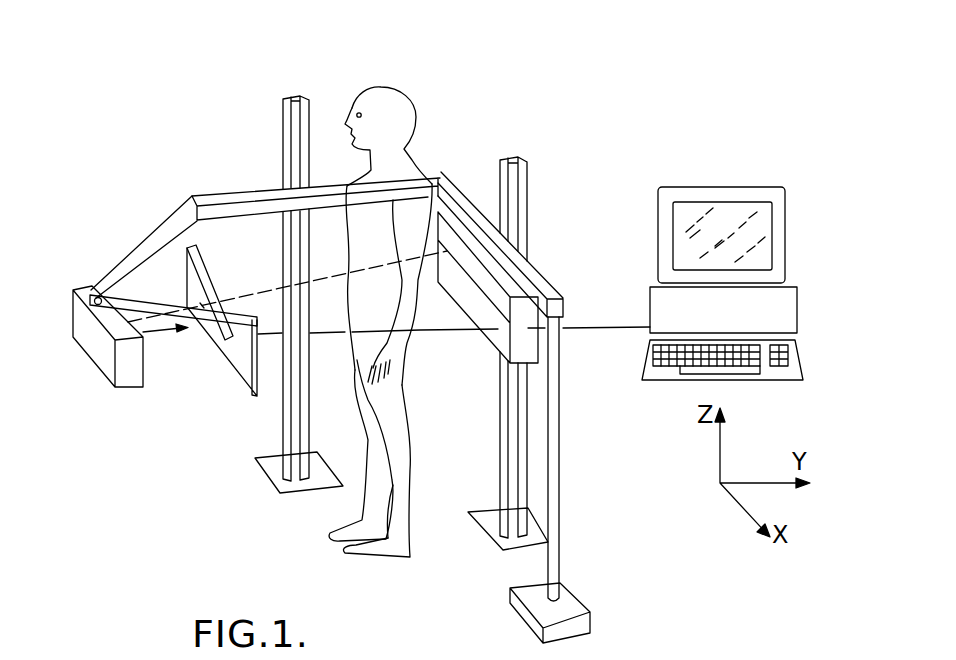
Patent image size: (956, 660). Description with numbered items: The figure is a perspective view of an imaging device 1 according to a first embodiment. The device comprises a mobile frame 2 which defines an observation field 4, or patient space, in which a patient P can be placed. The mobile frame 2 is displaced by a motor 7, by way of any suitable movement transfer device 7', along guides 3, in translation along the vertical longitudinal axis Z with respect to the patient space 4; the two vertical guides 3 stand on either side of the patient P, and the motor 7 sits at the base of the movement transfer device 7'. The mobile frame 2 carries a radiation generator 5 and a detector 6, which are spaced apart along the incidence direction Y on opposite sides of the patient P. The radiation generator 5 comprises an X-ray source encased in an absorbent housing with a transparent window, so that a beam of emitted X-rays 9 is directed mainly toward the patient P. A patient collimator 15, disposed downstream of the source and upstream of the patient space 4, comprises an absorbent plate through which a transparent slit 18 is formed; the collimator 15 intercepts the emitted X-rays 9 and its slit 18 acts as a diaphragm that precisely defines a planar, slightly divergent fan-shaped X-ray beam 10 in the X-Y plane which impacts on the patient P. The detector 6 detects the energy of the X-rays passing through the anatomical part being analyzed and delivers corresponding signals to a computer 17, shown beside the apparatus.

The imaging device 1 is at (559, 236).
The frame 2 is at (537, 281).
The guides 3 is at (287, 113).
The observation field 4 is at (428, 141).
The radiation generator 5 is at (129, 371).
The detector 6 is at (490, 338).
The motor 7 is at (563, 605).
The movement transfer device 7' is at (576, 459).
The beam of emitted X-rays 9 is at (160, 335).
The X-ray beam 10 is at (270, 307).
The patient collimator 15 is at (237, 367).
The computer 17 is at (773, 307).
The slit 18 is at (223, 344).
The patient P is at (397, 168).